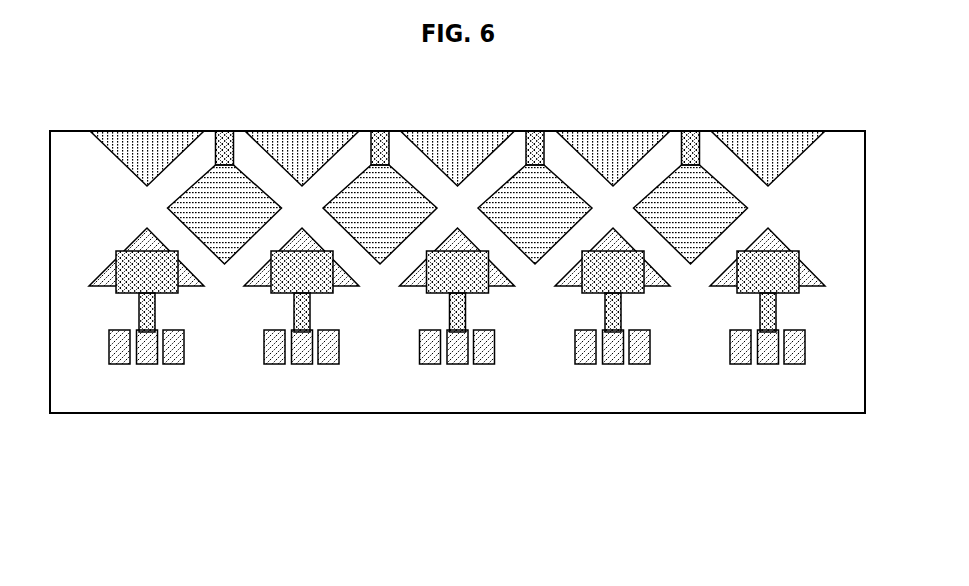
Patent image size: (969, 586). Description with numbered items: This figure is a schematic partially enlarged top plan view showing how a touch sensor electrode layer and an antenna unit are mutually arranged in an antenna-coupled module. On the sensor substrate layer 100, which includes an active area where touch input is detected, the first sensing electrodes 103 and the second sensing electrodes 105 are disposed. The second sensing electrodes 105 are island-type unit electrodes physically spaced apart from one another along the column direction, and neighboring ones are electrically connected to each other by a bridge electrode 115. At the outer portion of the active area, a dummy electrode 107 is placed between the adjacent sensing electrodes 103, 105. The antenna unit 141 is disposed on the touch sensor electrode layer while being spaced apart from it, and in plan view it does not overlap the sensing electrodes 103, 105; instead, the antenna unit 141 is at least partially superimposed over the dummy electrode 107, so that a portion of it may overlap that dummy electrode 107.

The sensor substrate layer 100 is at (226, 396).
The first sensing electrodes 103 is at (310, 135).
The second sensing electrodes 105 is at (692, 245).
The dummy electrode 107 is at (571, 287).
The bridge electrode 115 is at (380, 132).
The antenna unit 141 is at (313, 307).